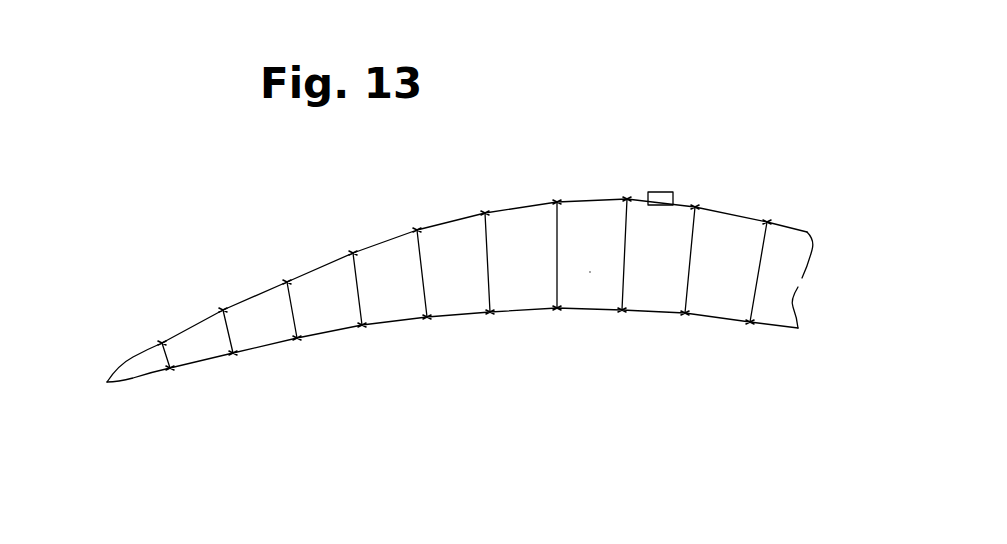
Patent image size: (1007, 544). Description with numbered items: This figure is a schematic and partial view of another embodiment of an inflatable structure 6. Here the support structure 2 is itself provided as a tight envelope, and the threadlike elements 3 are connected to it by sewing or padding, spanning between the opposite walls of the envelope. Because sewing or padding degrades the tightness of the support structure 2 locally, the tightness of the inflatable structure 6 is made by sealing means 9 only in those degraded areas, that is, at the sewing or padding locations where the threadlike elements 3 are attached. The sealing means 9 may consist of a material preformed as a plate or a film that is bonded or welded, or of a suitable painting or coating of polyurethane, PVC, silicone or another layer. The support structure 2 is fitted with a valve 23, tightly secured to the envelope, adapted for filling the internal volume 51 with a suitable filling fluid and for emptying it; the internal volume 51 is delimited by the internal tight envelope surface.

The support structure 2 is at (321, 263).
The threadlike elements 3 is at (229, 327).
The inflatable structure 6 is at (450, 213).
The sealing means 9 is at (218, 304).
The valve 23 is at (670, 180).
The internal volume 51 is at (590, 282).